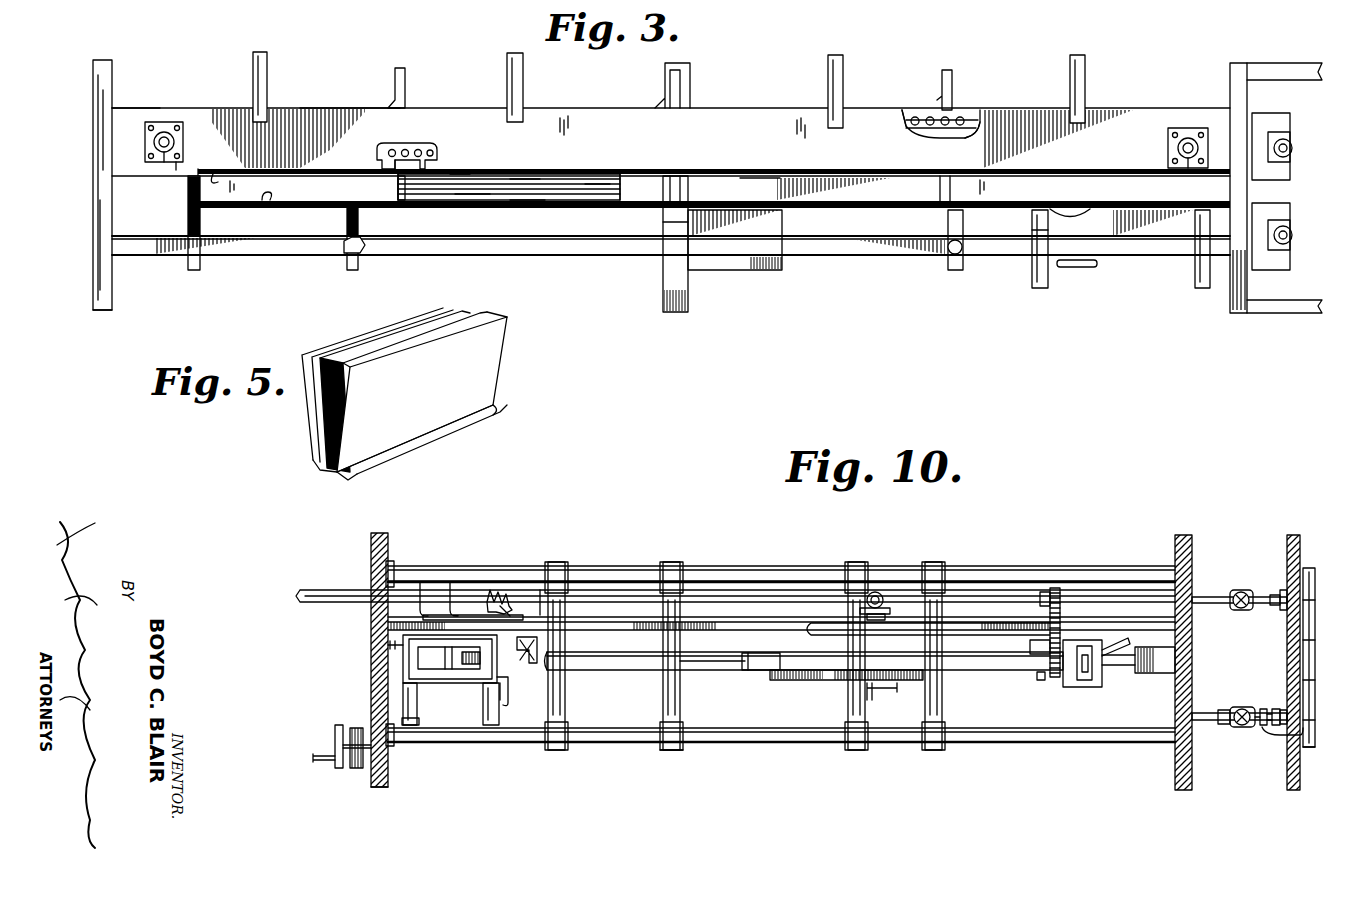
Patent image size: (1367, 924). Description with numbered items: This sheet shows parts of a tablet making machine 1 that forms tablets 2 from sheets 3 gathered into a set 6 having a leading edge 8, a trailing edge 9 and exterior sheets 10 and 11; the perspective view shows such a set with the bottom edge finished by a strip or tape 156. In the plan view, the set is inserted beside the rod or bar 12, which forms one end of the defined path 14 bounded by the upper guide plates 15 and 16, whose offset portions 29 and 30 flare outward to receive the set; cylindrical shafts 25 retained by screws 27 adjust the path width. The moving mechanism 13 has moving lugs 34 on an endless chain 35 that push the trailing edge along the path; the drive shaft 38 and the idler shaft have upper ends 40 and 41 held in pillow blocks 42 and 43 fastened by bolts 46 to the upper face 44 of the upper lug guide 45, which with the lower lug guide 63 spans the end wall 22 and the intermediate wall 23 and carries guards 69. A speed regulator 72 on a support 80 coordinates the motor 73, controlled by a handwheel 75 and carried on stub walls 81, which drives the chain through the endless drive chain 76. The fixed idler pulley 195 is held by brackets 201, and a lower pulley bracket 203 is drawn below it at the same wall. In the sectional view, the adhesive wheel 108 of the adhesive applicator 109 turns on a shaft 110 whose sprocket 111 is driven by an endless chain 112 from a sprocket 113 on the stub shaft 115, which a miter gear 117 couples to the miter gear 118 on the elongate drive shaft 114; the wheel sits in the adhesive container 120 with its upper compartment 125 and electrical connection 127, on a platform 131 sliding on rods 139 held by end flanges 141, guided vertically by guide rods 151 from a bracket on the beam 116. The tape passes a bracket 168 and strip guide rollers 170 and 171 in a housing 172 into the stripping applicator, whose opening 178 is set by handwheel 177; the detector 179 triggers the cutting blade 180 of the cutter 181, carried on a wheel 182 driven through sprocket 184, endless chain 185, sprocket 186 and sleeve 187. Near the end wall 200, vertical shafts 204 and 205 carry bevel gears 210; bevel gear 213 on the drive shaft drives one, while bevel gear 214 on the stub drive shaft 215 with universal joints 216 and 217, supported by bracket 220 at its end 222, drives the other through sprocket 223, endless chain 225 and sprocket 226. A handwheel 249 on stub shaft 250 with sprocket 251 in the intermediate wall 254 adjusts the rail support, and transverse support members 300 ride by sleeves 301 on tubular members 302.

In FIG. 3, the tablet making machine 1 is at (96, 309).
In FIG. 5, the tablet 2 is at (494, 392).
In FIG. 3, the sheet 3 is at (526, 176).
In FIG. 5, the sheet 3 is at (370, 340).
In FIG. 3, the set 6 is at (597, 176).
In FIG. 3, the leading edge 8 is at (620, 203).
In FIG. 5, the leading edge 8 is at (496, 409).
In FIG. 3, the trailing edge 9 is at (391, 201).
In FIG. 5, the trailing edge 9 is at (312, 464).
In FIG. 3, the exterior sheet 10 is at (605, 176).
In FIG. 5, the exterior sheet 10 is at (305, 352).
In FIG. 3, the exterior sheet 11 is at (527, 204).
In FIG. 5, the exterior sheet 11 is at (502, 345).
In FIG. 3, the rod or bar 12 is at (186, 218).
In FIG. 3, the moving mechanism 13 is at (410, 145).
In FIG. 3, the defined path 14 is at (758, 180).
In FIG. 3, the upper guide plate 15 is at (265, 201).
In FIG. 3, the upper guide plate 16 is at (215, 177).
In FIG. 3, the end wall 22 is at (93, 270).
In FIG. 3, the intermediate wall 23 is at (1230, 70).
In FIG. 3, the cylindrical shaft 25 is at (345, 222).
In FIG. 3, the screw 27 is at (366, 250).
In FIG. 3, the offset portion 29 is at (470, 201).
In FIG. 3, the offset portion 30 is at (457, 175).
In FIG. 3, the moving lug 34 is at (396, 184).
In FIG. 3, the endless chain 35 is at (912, 112).
In FIG. 3, the drive shaft 38 is at (170, 137).
In FIG. 3, the upper end 40 is at (152, 146).
In FIG. 3, the upper end 41 is at (1178, 150).
In FIG. 3, the pillow block 42 is at (172, 122).
In FIG. 3, the pillow block 43 is at (1168, 130).
In FIG. 3, the upper face 44 is at (128, 112).
In FIG. 3, the upper lug guide 45 is at (348, 110).
In FIG. 3, the screws or bolts 46 is at (176, 166).
In FIG. 3, the lower lug guide 63 is at (980, 121).
In FIG. 3, the guard 69 is at (828, 60).
In FIG. 3, the speed regulator 72 is at (775, 272).
In FIG. 3, the motor 73 is at (1040, 230).
In FIG. 3, the handwheel 75 is at (1097, 265).
In FIG. 3, the endless drive chain 76 is at (1088, 215).
In FIG. 3, the support 80 is at (664, 288).
In FIG. 3, the stub wall 81 is at (1036, 289).
In FIG. 3, the stub shaft 115 is at (920, 203).
In FIG. 3, the fixed idler pulley 195 is at (1288, 152).
In FIG. 3, the bracket 201 is at (1262, 114).
In FIG. 3, the bearing box 203 is at (1280, 270).
In FIG. 5, the strip or tape 156 is at (378, 468).
In FIG. 10, the strip or tape 156 is at (720, 666).
In FIG. 10, the adhesive wheel 108 is at (437, 672).
In FIG. 10, the adhesive applicator 109 is at (501, 682).
In FIG. 10, the shaft 110 is at (458, 678).
In FIG. 10, the sprocket 111 is at (419, 596).
In FIG. 10, the endless chain 112 is at (451, 600).
In FIG. 10, the sprocket 113 is at (540, 598).
In FIG. 10, the elongate drive shaft 114 is at (318, 590).
In FIG. 10, the beam 116 is at (338, 622).
In FIG. 10, the miter gear 117 is at (505, 606).
In FIG. 10, the miter gear 118 is at (490, 598).
In FIG. 10, the adhesive container 120 is at (400, 660).
In FIG. 10, the upper compartment 125 is at (405, 645).
In FIG. 10, the electrical connection 127 is at (516, 652).
In FIG. 10, the platform 131 is at (402, 716).
In FIG. 10, the cylindrical rod 139 is at (497, 735).
In FIG. 10, the end flange 141 is at (420, 726).
In FIG. 10, the guide rod 151 is at (655, 673).
In FIG. 10, the bracket 168 is at (752, 640).
In FIG. 10, the strip guide roller 170 is at (775, 666).
In FIG. 10, the strip guide roller 171 is at (806, 630).
In FIG. 10, the housing 172 is at (797, 681).
In FIG. 10, the handwheel 177 is at (886, 691).
In FIG. 10, the opening 178 is at (940, 661).
In FIG. 10, the sensor or detector 179 is at (1140, 674).
In FIG. 10, the cutting blade 180 is at (1085, 684).
In FIG. 10, the cutter 181 is at (1068, 690).
In FIG. 10, the wheel 182 is at (1090, 643).
In FIG. 10, the sprocket 184 is at (1045, 680).
In FIG. 10, the endless chain 185 is at (1047, 645).
In FIG. 10, the sprocket 186 is at (1066, 610).
In FIG. 10, the sleeve 187 is at (1050, 590).
In FIG. 10, the end wall 200 is at (1293, 535).
In FIG. 10, the vertical shaft 204 is at (1240, 610).
In FIG. 10, the vertical shaft 205 is at (1250, 728).
In FIG. 10, the bevel gear 210 is at (1240, 590).
In FIG. 10, the bevel gear 213 is at (1252, 596).
In FIG. 10, the bevel gear 214 is at (1279, 725).
In FIG. 10, the stub drive shaft 215 is at (1270, 708).
In FIG. 10, the universal joint 216 is at (1305, 730).
In FIG. 10, the universal joint 217 is at (1244, 705).
In FIG. 10, the bracket 220 is at (1233, 728).
In FIG. 10, the end 222 is at (1226, 710).
In FIG. 10, the sprocket 223 is at (1313, 568).
In FIG. 10, the endless chain 225 is at (1316, 640).
In FIG. 10, the sprocket 226 is at (1306, 750).
In FIG. 10, the handwheel 249 is at (325, 772).
In FIG. 10, the stub shaft 250 is at (347, 743).
In FIG. 10, the sprocket 251 is at (355, 770).
In FIG. 10, the intermediate wall 254 is at (390, 782).
In FIG. 10, the transverse support member 300 is at (945, 713).
In FIG. 10, the sleeve 301 is at (700, 751).
In FIG. 10, the tubular member 302 is at (785, 567).